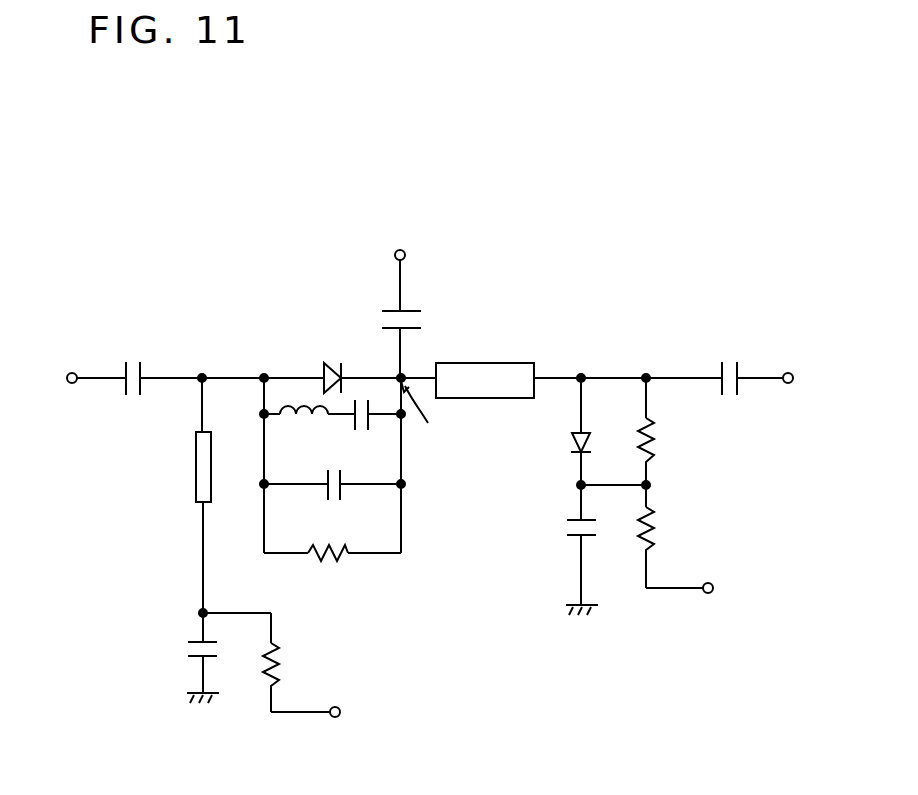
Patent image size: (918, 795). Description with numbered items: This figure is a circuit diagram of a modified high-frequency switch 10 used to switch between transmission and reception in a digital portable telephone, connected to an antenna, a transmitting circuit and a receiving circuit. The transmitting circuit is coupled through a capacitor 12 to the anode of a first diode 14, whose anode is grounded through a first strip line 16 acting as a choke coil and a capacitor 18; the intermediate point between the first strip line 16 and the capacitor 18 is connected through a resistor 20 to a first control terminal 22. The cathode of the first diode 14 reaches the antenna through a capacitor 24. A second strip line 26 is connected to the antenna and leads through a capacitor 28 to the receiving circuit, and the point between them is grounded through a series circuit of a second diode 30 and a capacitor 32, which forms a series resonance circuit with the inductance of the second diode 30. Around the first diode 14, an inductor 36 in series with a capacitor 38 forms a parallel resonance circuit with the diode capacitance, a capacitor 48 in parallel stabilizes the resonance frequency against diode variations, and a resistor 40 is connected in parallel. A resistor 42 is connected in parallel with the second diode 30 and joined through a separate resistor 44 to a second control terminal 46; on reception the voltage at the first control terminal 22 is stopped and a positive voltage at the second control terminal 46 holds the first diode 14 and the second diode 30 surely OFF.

The high-frequency switch 10 is at (214, 210).
The capacitor 12 is at (143, 364).
The first diode 14 is at (333, 372).
The first strip line 16 is at (196, 445).
The capacitor 18 is at (188, 643).
The resistor 20 is at (278, 668).
The first control terminal 22 is at (341, 712).
The capacitor 24 is at (413, 310).
The second strip line 26 is at (518, 363).
The capacitor 28 is at (721, 370).
The second diode 30 is at (572, 445).
The capacitor 32 is at (568, 537).
The inductor 36 is at (298, 420).
The capacitor 38 is at (354, 422).
The resistor 40 is at (335, 560).
The resistor 42 is at (652, 452).
The resistor 44 is at (653, 535).
The second control terminal 46 is at (714, 590).
The capacitor 48 is at (345, 490).